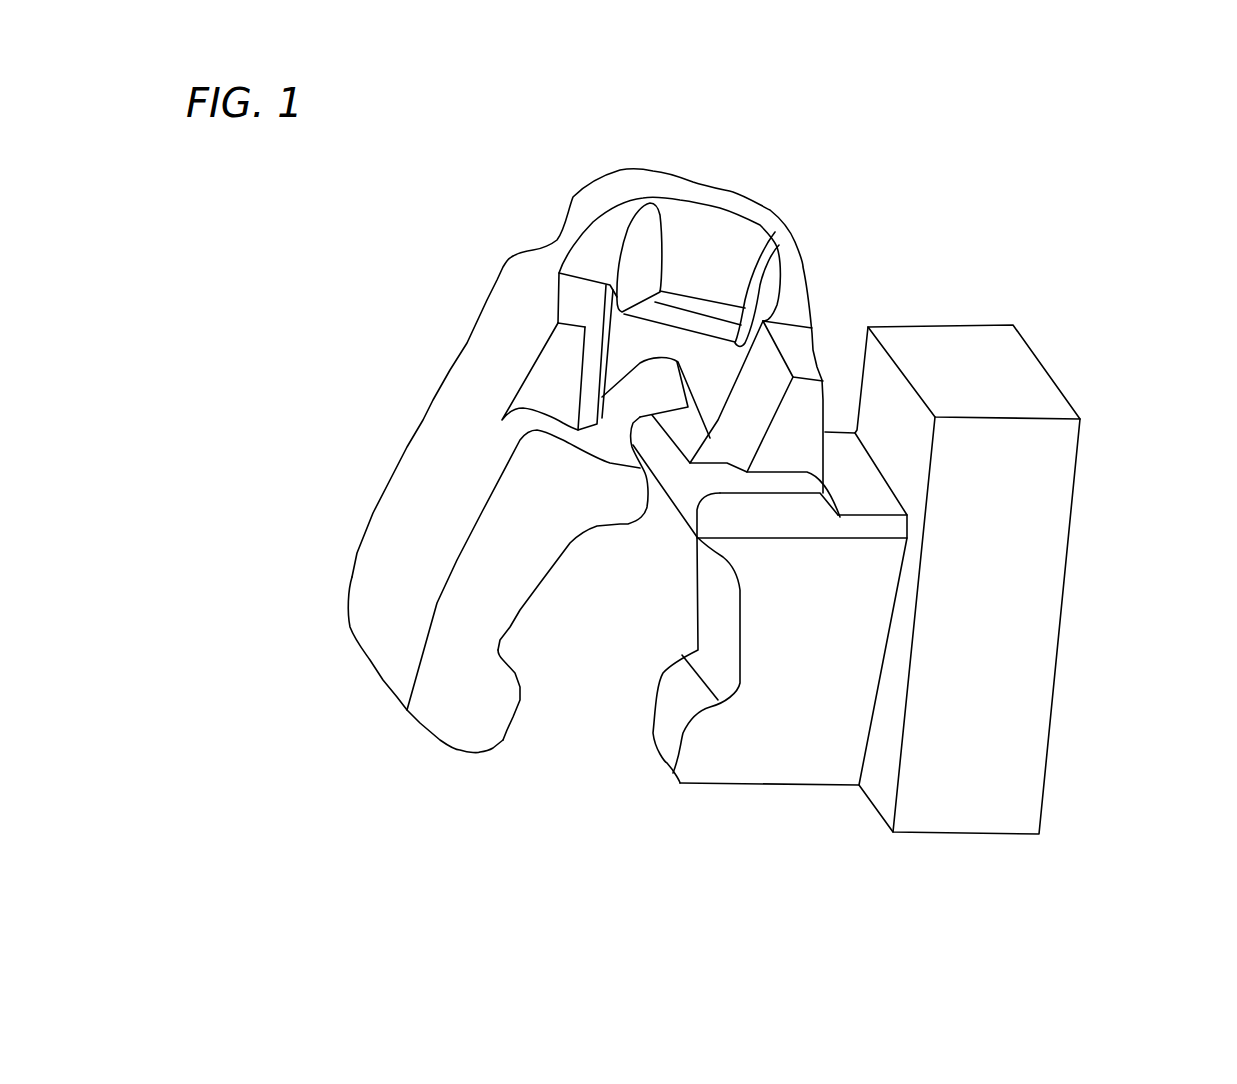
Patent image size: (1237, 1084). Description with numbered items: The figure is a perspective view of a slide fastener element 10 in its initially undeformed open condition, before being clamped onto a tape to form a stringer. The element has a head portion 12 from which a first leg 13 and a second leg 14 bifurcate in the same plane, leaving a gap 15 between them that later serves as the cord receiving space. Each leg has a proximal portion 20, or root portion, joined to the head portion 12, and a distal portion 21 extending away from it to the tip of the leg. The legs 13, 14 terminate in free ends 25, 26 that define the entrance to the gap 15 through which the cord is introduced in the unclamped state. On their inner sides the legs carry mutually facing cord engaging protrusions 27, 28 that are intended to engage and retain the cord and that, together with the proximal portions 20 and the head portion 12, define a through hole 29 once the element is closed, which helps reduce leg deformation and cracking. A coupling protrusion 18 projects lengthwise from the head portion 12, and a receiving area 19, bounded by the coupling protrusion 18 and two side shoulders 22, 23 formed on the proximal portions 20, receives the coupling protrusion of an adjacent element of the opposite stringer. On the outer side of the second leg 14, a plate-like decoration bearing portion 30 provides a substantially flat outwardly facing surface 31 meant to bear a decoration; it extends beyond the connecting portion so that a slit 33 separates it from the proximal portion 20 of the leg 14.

The fastener element 10 is at (877, 158).
The head portion 12 is at (605, 246).
The first leg 13 is at (490, 605).
The second leg 14 is at (792, 635).
The gap 15 is at (655, 642).
The coupling protrusion 18 is at (695, 247).
The receiving area 19 is at (723, 358).
The proximal portion 20 is at (835, 400).
The distal portion 21 is at (440, 597).
The side shoulder 22 is at (612, 314).
The side shoulder 23 is at (808, 392).
The free end 25 is at (503, 737).
The free end 26 is at (662, 725).
The cord engaging protrusion 27 is at (617, 492).
The cord engaging protrusion 28 is at (687, 493).
The through hole 29 is at (667, 389).
The decoration bearing portion 30 is at (1026, 525).
The outwardly facing surface 31 is at (1058, 647).
The slit 33 is at (853, 370).